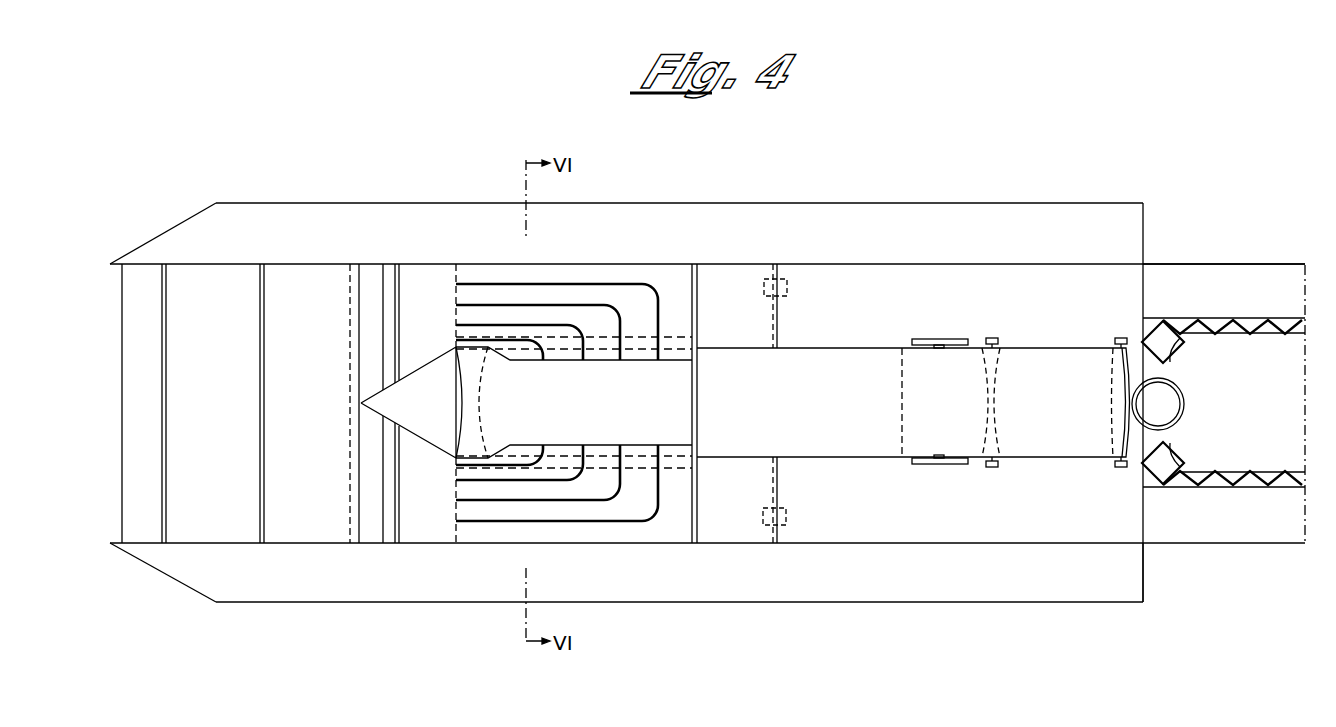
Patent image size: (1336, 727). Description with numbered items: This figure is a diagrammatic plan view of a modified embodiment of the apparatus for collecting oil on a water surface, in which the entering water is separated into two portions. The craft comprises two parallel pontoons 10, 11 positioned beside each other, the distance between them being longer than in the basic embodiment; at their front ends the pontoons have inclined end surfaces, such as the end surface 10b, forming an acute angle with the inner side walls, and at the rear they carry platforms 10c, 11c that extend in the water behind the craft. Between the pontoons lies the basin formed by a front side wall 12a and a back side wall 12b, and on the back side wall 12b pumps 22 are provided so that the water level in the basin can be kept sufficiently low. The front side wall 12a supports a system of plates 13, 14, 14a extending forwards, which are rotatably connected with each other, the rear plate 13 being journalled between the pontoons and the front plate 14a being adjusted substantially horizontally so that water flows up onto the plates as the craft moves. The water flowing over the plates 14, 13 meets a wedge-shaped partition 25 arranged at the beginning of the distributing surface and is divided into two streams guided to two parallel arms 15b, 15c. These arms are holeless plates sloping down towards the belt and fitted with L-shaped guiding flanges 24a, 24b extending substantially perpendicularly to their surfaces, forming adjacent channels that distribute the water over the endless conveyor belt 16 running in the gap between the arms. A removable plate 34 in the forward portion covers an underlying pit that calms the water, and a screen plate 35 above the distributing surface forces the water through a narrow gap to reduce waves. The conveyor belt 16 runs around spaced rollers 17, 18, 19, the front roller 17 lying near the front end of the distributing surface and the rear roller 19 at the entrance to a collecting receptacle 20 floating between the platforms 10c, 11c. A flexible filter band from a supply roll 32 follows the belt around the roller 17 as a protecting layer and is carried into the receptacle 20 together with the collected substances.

The pontoon 10 is at (303, 208).
The end surface 10b is at (148, 240).
The platform 10c is at (1203, 270).
The pontoon 11 is at (345, 590).
The platform 11c is at (1203, 535).
The plate 14a is at (133, 535).
The plate 14 is at (228, 538).
The rear plate 13 is at (307, 538).
The front side wall 12a is at (350, 515).
The back side wall 12b is at (777, 478).
The screen plate 35 is at (388, 275).
The removable plate 34 is at (428, 282).
The roller 17 is at (455, 347).
The wedge-shaped partition 25 is at (440, 442).
The L-shaped guiding flange 24a is at (488, 295).
The L-shaped guiding flange 24b is at (500, 505).
The arm 15b is at (597, 300).
The arm 15c is at (583, 516).
The endless conveyor belt 16 is at (852, 364).
The pump 22 is at (770, 279).
The supply roll 32 is at (930, 362).
The roller 18 is at (998, 346).
The roller 19 is at (1121, 338).
The collecting receptacle 20 is at (1240, 457).